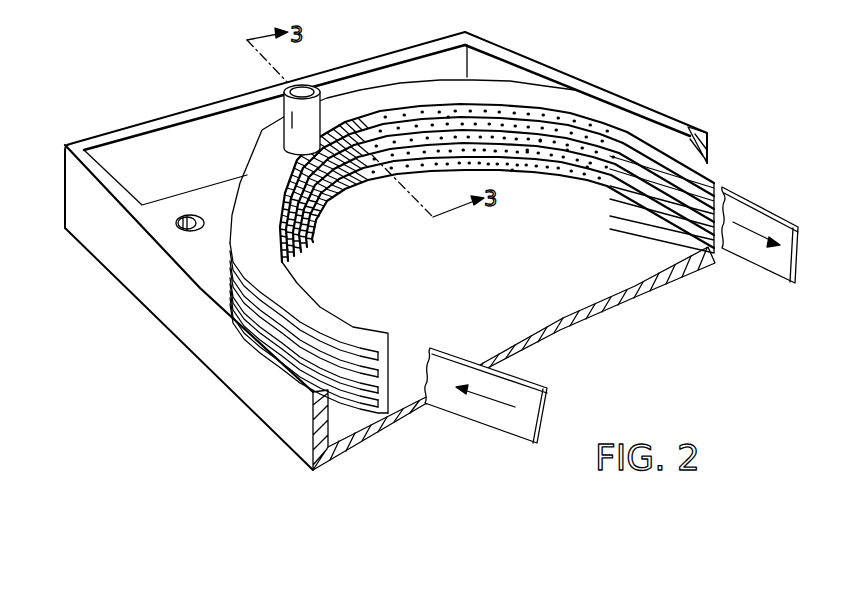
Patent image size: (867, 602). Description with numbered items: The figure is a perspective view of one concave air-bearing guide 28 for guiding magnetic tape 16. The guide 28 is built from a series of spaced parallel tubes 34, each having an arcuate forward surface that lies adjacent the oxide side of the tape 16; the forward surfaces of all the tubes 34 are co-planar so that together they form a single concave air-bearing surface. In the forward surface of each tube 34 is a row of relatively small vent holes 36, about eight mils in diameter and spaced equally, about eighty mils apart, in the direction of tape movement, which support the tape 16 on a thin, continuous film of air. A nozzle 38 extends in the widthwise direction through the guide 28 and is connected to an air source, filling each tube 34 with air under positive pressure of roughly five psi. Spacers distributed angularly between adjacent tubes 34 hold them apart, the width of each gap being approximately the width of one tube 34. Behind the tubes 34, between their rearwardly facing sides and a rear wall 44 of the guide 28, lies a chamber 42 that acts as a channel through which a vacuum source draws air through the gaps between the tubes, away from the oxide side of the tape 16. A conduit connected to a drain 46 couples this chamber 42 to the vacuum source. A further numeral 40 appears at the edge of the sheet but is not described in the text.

The magnetic tape 16 is at (478, 410).
The concave air-bearing guide 28 is at (387, 200).
The tube 34 is at (527, 150).
The vent hole 36 is at (587, 167).
The nozzle 38 is at (290, 116).
The housing 40 is at (473, 598).
The chamber 42 is at (497, 70).
The rear wall 44 is at (172, 137).
The drain 46 is at (188, 213).